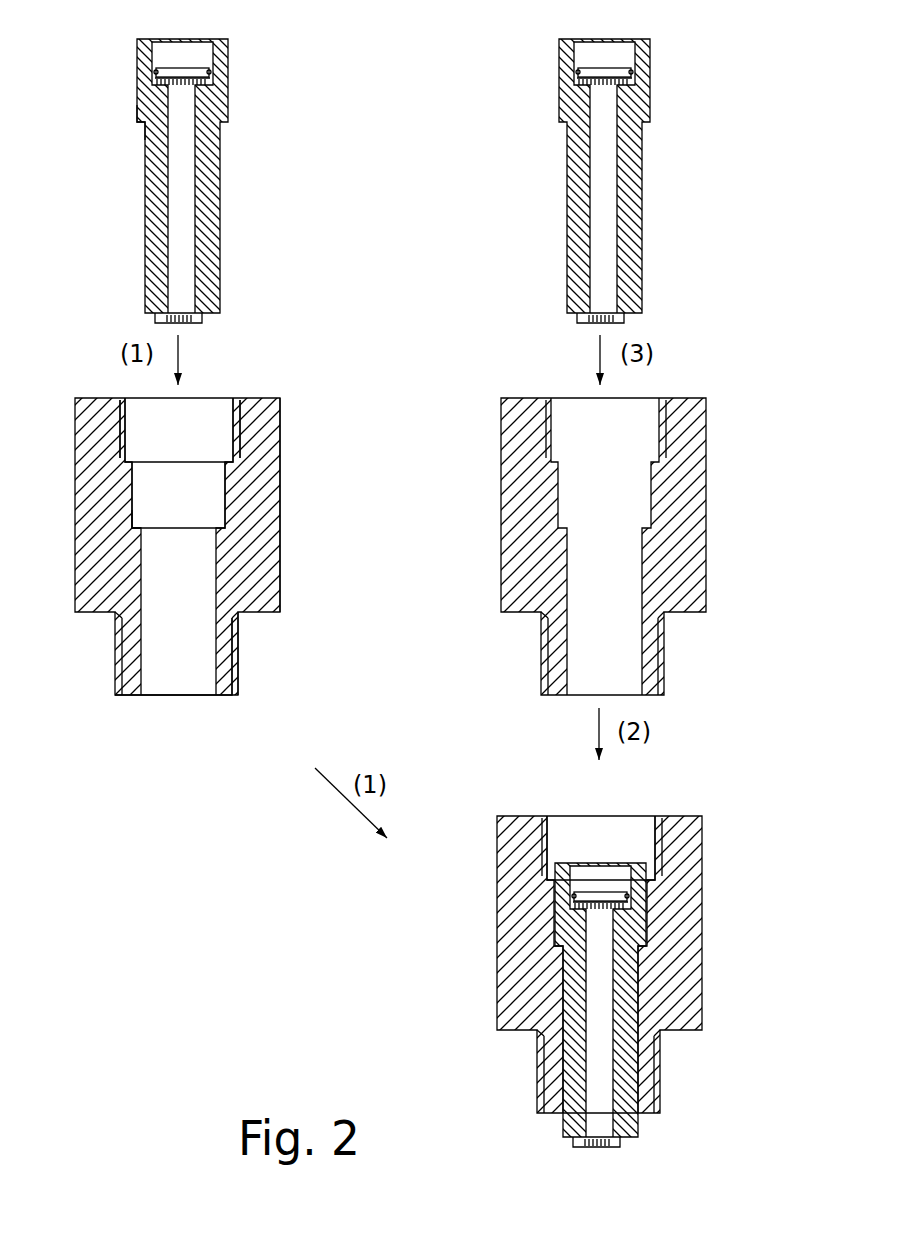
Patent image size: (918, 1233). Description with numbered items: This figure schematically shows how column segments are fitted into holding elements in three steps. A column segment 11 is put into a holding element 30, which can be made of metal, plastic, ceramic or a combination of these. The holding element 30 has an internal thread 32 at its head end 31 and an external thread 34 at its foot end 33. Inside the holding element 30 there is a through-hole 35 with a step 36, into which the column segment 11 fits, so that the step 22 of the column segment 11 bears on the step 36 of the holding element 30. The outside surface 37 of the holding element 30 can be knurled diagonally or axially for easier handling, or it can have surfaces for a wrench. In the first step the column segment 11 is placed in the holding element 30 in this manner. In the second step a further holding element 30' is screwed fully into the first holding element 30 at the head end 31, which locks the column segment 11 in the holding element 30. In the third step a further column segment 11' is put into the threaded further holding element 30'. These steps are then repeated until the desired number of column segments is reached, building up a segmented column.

The column segment 11 is at (445, 593).
The further column segment 11' is at (654, 181).
The step of the column segment 22 is at (143, 124).
The holding element 30 is at (450, 755).
The further holding element 30' is at (667, 546).
The head end 31 is at (263, 388).
The internal thread 32 is at (231, 412).
The foot end 33 is at (240, 653).
The external thread 34 is at (237, 673).
The through-hole 35 is at (216, 497).
The step of the holding element 36 is at (142, 521).
The outside surface 37 is at (282, 458).